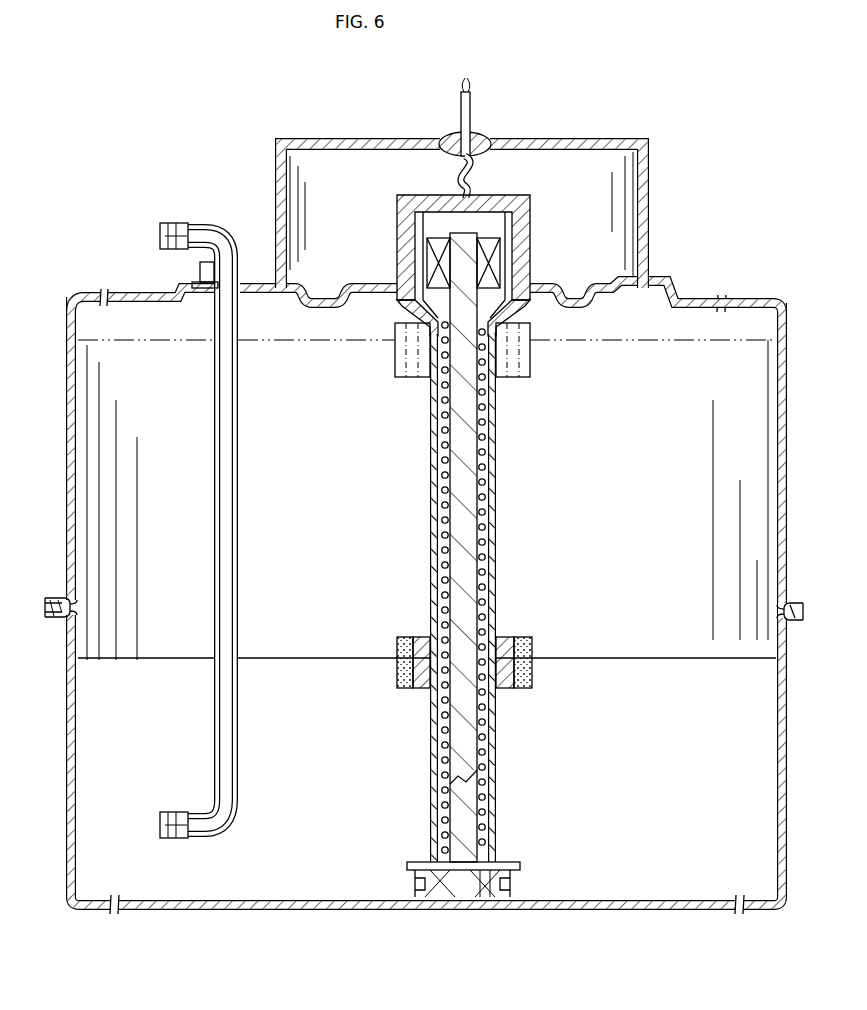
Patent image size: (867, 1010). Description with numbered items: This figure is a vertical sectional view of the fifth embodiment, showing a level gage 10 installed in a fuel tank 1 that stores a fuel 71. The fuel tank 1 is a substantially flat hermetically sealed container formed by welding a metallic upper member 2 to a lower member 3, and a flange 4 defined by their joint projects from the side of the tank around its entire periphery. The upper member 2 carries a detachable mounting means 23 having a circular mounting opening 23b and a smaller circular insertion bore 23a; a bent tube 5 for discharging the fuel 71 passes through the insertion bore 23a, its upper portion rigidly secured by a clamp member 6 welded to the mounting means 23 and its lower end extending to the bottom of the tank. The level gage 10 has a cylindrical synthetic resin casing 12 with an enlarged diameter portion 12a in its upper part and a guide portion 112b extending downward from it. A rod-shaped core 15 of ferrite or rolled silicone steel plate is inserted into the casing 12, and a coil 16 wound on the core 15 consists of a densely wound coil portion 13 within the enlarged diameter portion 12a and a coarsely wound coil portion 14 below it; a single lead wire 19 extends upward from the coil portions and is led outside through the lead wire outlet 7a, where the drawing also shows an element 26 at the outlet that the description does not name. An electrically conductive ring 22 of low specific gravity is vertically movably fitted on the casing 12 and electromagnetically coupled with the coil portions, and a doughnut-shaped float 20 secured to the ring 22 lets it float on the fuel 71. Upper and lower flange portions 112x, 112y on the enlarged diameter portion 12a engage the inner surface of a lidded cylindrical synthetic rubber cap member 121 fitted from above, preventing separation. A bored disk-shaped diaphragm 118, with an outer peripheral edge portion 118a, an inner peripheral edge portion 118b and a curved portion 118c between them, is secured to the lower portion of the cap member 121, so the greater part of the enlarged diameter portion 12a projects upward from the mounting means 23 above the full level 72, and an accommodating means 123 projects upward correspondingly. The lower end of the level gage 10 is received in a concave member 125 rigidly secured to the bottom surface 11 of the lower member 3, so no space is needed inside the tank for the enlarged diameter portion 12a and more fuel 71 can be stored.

The fuel tank 1 is at (68, 352).
The upper member 2 is at (68, 462).
The lower member 3 is at (68, 734).
The flange 4 is at (50, 597).
The bent tube 5 is at (214, 470).
The clamp member 6 is at (202, 274).
The lead wire outlet 7a is at (477, 134).
The level gage 10 is at (426, 476).
The bottom surface 11 is at (235, 898).
The casing 12 is at (428, 394).
The enlarged diameter portion 12a is at (427, 255).
The densely wound coil portion 13 is at (446, 232).
The coarsely wound coil portion 14 is at (445, 421).
The core 15 is at (460, 507).
The coil 16 is at (444, 546).
The lead wire 19 is at (480, 170).
The float 20 is at (402, 637).
The electrically conductive ring 22 is at (421, 637).
The mounting means 23 is at (180, 288).
The insertion bore 23a is at (213, 296).
The mounting opening 23b is at (324, 304).
The grommet 26 is at (458, 134).
The fuel 71 is at (640, 657).
The full level 72 is at (275, 342).
The guide portion 112b is at (436, 448).
The upper flange portion 112x is at (406, 220).
The lower flange portion 112y is at (412, 272).
The diaphragm 118 is at (323, 294).
The outer peripheral edge portion 118a is at (645, 302).
The inner peripheral edge portion 118b is at (543, 292).
The curved portion 118c is at (577, 308).
The cap member 121 is at (398, 206).
The accommodating means 123 is at (345, 138).
The concave member 125 is at (508, 884).